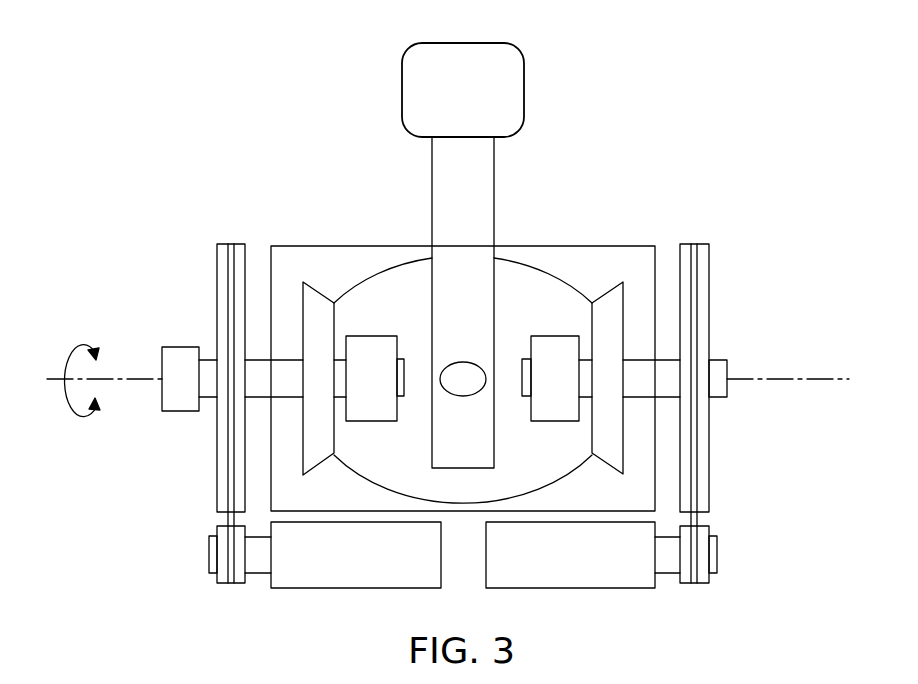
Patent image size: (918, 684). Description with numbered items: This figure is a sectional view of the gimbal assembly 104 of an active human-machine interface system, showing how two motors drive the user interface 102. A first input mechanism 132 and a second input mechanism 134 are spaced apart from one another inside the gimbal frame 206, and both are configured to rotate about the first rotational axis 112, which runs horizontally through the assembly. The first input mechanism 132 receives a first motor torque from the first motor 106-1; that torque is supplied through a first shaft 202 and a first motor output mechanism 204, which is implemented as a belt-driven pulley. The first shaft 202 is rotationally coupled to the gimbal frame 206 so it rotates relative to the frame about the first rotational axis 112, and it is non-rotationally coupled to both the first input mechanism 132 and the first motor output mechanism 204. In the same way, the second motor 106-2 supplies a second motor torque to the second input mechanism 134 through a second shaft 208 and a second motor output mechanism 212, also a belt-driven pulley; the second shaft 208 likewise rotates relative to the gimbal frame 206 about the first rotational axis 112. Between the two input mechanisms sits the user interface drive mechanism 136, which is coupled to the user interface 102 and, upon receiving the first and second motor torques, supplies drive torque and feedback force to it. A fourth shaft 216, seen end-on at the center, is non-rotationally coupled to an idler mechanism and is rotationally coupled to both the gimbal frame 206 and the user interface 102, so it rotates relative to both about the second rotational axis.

The user interface 102 is at (518, 90).
The gimbal assembly 104 is at (312, 135).
The first motor 106-1 is at (599, 589).
The second motor 106-2 is at (326, 589).
The first rotational axis 112 is at (120, 382).
The first input mechanism 132 is at (606, 291).
The second input mechanism 134 is at (318, 291).
The user interface drive mechanism 136 is at (386, 268).
The first shaft 202 is at (718, 360).
The first motor output mechanism 204 is at (709, 275).
The gimbal frame 206 is at (534, 246).
The second shaft 208 is at (212, 360).
The second motor output mechanism 212 is at (222, 244).
The fourth shaft 216 is at (460, 367).